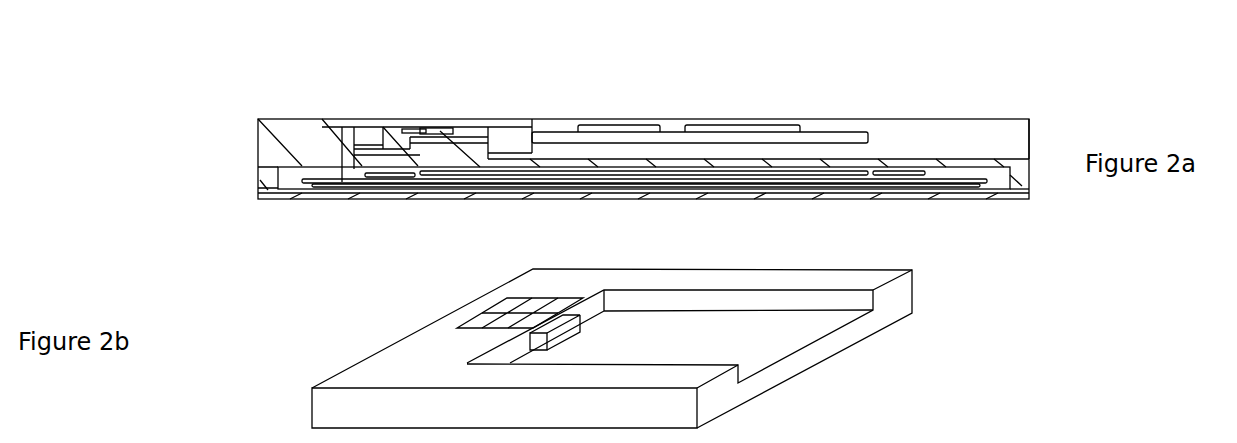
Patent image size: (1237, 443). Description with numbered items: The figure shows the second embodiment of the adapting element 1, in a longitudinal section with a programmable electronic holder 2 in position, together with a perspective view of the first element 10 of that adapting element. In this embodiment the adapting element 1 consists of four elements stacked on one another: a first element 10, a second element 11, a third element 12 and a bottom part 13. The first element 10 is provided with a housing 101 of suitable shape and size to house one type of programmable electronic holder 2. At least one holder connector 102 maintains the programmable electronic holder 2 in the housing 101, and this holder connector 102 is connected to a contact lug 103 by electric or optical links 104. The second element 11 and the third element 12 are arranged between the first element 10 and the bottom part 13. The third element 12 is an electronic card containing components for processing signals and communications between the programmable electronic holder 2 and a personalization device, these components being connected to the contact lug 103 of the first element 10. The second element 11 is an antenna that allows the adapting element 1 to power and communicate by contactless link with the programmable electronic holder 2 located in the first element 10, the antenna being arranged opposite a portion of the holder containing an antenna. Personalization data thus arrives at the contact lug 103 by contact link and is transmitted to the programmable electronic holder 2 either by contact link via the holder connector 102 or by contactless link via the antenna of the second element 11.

In FIG. 2A, the adapting element 1 is at (217, 118).
In FIG. 2A, the programmable electronic holder 2 is at (667, 139).
In FIG. 2A, the first element 10 is at (266, 156).
In FIG. 2B, the first element 10 is at (318, 362).
In FIG. 2A, the second element 11 is at (388, 177).
In FIG. 2A, the third element 12 is at (778, 178).
In FIG. 2A, the bottom part 13 is at (323, 194).
In FIG. 2A, the housing 101 is at (915, 143).
In FIG. 2B, the housing 101 is at (762, 340).
In FIG. 2A, the holder connector 102 is at (506, 140).
In FIG. 2B, the holder connector 102 is at (565, 330).
In FIG. 2A, the contact lug 103 is at (390, 123).
In FIG. 2B, the contact lug 103 is at (500, 312).
In FIG. 2A, the electric or optical links 104 is at (433, 135).